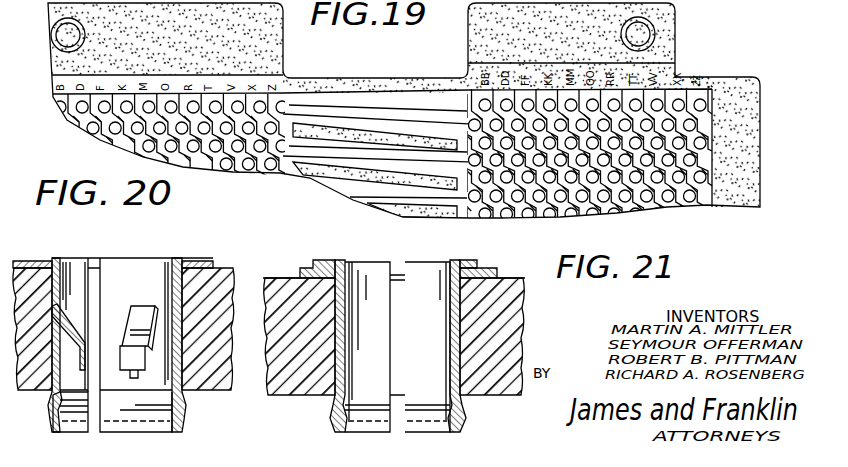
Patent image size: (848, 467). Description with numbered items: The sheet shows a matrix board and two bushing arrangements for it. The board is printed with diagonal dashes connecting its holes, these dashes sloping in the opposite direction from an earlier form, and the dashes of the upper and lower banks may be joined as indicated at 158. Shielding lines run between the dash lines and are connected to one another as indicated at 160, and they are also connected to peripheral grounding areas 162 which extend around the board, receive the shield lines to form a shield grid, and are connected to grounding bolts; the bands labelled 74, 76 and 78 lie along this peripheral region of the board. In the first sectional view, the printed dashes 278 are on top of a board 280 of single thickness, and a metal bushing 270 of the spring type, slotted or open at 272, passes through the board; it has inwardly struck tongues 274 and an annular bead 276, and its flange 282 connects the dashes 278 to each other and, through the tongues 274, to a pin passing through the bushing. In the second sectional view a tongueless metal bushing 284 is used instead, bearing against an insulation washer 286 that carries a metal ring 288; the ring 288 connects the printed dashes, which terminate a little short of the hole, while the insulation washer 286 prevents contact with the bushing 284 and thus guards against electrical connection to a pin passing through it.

In FIG. 19, the board layer 74 is at (736, 183).
In FIG. 19, the board layer 76 is at (736, 139).
In FIG. 19, the board layer 78 is at (717, 97).
In FIG. 19, the connection of dashes of upper and lower banks 158 is at (310, 107).
In FIG. 19, the connection of shielding lines 160 is at (353, 135).
In FIG. 19, the peripheral grounding areas 162 is at (420, 90).
In FIG. 20, the metal bushing 270 is at (183, 378).
In FIG. 20, the slot 272 is at (95, 262).
In FIG. 20, the inwardly struck tongues 274 is at (67, 333).
In FIG. 20, the annular bead 276 is at (182, 418).
In FIG. 20, the printed dashes 278 is at (220, 267).
In FIG. 20, the board 280 is at (235, 270).
In FIG. 21, the board 280 is at (527, 313).
In FIG. 20, the flange 282 is at (182, 265).
In FIG. 21, the tongueless metal bushing 284 is at (460, 264).
In FIG. 21, the insulation washer 286 is at (488, 268).
In FIG. 21, the metal ring 288 is at (498, 275).